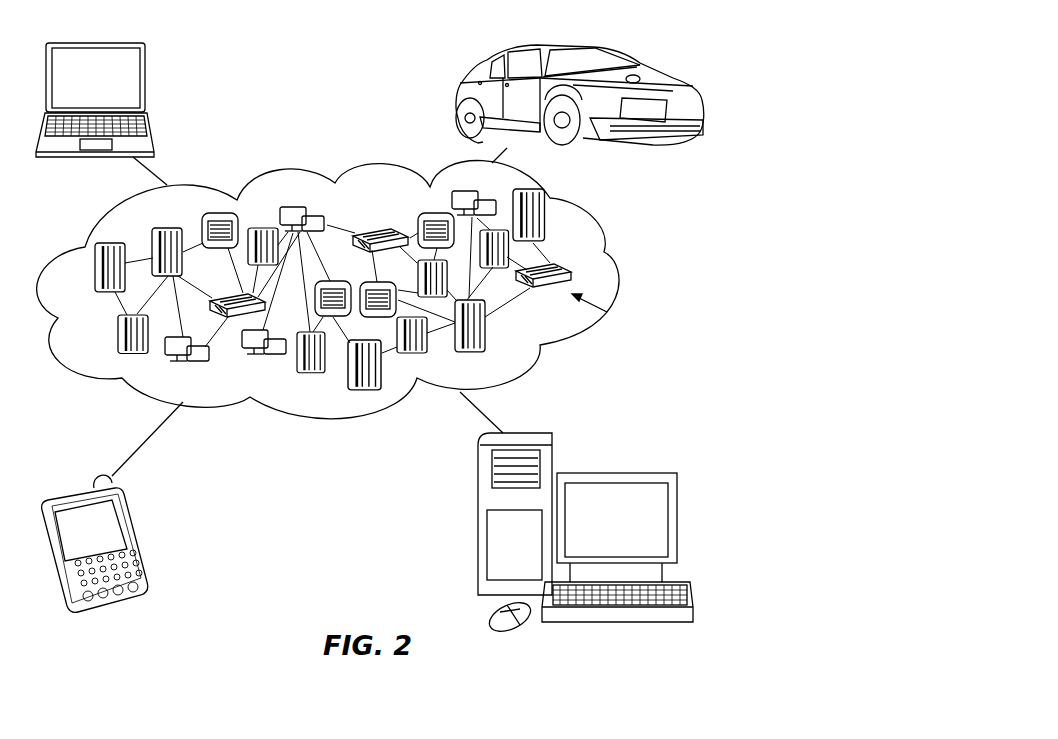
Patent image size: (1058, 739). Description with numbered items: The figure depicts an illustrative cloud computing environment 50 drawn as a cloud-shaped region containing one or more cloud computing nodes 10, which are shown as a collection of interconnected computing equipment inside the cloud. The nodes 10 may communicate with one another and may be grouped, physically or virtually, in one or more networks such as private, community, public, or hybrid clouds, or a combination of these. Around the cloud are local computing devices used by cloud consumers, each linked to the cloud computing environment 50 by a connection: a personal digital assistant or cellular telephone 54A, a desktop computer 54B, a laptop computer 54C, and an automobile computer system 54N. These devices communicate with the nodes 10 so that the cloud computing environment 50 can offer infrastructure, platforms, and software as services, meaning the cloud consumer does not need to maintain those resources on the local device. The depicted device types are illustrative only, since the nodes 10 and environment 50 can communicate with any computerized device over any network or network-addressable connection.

The cloud computing node 10 is at (607, 312).
The cloud computing environment 50 is at (612, 275).
The personal digital assistant or cellular telephone 54A is at (140, 540).
The desktop computer 54B is at (613, 473).
The laptop computer 54C is at (146, 86).
The automobile computer system 54N is at (457, 97).